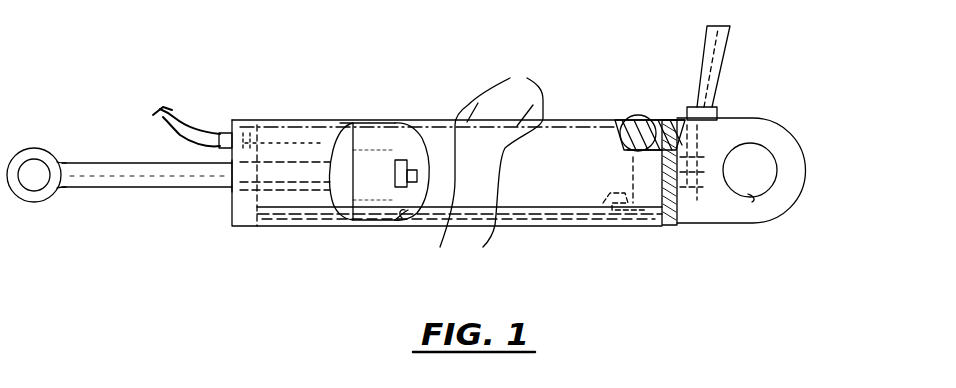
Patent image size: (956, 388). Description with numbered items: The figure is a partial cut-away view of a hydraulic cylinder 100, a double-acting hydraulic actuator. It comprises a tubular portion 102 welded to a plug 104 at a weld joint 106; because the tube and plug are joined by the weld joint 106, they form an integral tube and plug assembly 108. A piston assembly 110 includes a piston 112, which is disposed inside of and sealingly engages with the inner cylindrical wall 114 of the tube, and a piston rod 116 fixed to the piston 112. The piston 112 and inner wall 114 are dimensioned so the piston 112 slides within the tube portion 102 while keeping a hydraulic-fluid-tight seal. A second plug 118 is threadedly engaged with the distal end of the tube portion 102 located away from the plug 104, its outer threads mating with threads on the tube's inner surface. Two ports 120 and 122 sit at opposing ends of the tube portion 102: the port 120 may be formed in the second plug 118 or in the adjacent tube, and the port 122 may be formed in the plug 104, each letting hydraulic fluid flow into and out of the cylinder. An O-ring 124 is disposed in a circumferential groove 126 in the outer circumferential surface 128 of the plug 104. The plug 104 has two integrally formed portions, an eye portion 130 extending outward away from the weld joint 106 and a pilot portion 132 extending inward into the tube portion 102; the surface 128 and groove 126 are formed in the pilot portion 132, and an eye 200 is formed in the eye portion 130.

The hydraulic cylinder 100 is at (465, 31).
The tubular portion 102 is at (458, 151).
The plug 104 is at (755, 118).
The weld joint 106 is at (672, 228).
The integral tube and plug assembly 108 is at (733, 271).
The piston assembly 110 is at (183, 198).
The piston 112 is at (372, 140).
The inner cylindrical wall 114 is at (405, 210).
The piston rod 116 is at (88, 188).
The second plug 118 is at (231, 193).
The port 120 is at (224, 132).
The port 122 is at (718, 110).
The O-ring 124 is at (625, 130).
The circumferential groove 126 is at (622, 126).
The outer circumferential surface 128 is at (654, 120).
The eye portion 130 is at (806, 148).
The pilot portion 132 is at (593, 230).
The eye 200 is at (752, 196).